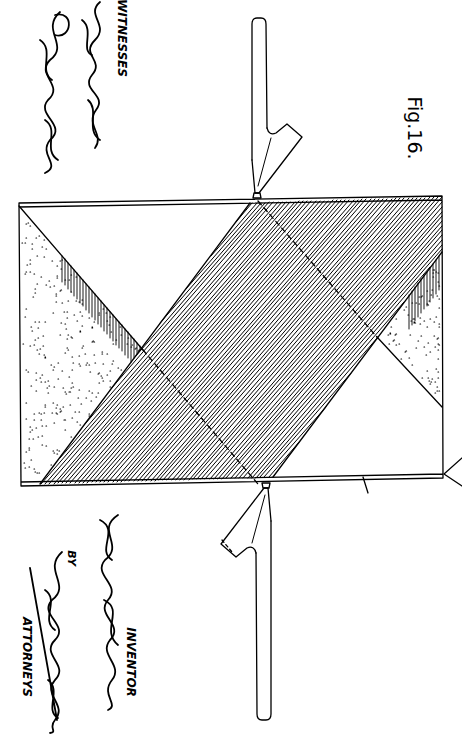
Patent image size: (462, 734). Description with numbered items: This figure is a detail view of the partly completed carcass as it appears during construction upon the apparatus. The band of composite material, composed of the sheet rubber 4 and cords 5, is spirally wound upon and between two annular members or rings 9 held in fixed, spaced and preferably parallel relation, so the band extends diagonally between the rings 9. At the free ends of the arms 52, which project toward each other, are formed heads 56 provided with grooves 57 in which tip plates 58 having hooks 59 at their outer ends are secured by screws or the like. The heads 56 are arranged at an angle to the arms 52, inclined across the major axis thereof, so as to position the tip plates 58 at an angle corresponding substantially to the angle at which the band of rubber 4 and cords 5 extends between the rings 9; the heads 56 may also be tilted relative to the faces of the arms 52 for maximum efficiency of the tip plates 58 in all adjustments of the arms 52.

The rubber sheet 4 is at (94, 292).
The cord 5 is at (342, 363).
The annular members or rings 9 is at (184, 203).
The arms 52 is at (265, 57).
The heads 56 is at (291, 140).
The grooves 57 is at (228, 545).
The tip plates 58 is at (255, 189).
The hooks 59 is at (247, 206).